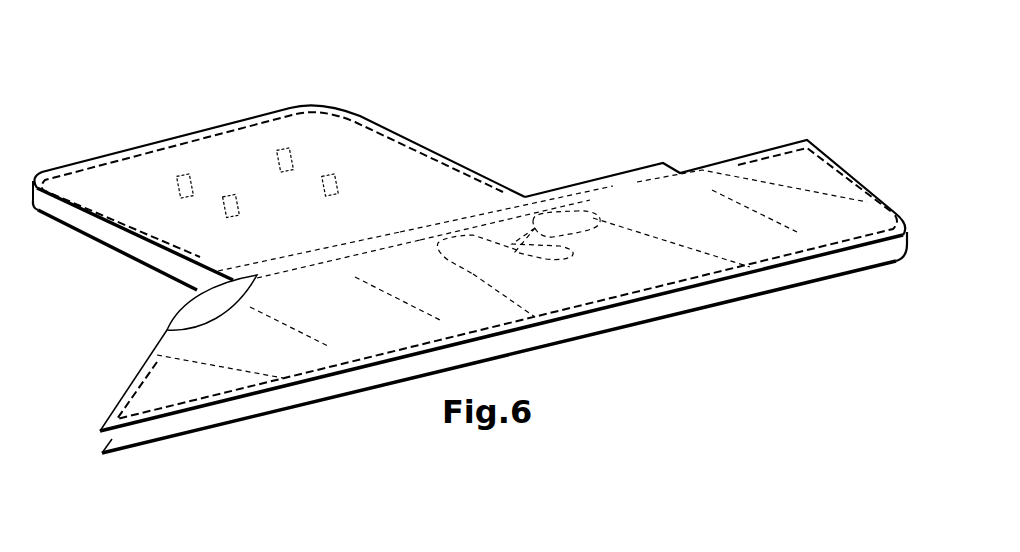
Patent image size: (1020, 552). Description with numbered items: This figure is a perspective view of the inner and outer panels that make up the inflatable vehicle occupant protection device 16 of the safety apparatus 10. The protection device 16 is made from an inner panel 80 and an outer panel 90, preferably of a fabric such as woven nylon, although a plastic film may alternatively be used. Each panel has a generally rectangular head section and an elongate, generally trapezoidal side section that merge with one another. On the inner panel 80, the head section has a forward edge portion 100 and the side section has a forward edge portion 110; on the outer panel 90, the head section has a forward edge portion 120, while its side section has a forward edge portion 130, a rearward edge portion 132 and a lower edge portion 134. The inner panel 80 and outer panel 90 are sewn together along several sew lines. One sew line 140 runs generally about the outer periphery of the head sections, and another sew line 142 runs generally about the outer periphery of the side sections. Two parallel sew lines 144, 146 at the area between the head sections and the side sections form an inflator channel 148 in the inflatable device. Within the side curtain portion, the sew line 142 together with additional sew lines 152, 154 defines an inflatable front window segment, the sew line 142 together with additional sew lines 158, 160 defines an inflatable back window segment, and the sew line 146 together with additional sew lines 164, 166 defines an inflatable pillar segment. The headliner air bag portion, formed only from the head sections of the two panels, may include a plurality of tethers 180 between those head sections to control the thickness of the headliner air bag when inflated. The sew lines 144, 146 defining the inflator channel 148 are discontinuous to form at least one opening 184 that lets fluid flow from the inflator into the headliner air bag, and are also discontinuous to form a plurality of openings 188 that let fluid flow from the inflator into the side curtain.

The safety apparatus 10 is at (832, 108).
The inflatable vehicle occupant protection device 16 is at (740, 127).
The inner panel 80 is at (33, 221).
The outer panel 90 is at (38, 163).
The forward edge portion 100 is at (117, 255).
The forward edge portion 110 is at (123, 395).
The forward edge portion 120 is at (73, 213).
The forward edge portion 130 is at (102, 453).
The rearward edge portion 132 is at (898, 262).
The lower edge portion 134 is at (260, 416).
The sew line 140 is at (375, 127).
The sew line 142 is at (680, 283).
The sew line 144 is at (263, 257).
The sew line 146 is at (165, 331).
The inflator channel 148 is at (437, 225).
The sew line 152 is at (213, 366).
The sew line 154 is at (497, 289).
The sew line 158 is at (655, 240).
The sew line 160 is at (823, 190).
The sew line 164 is at (507, 250).
The sew line 166 is at (555, 237).
The tethers 180 is at (330, 182).
The opening 184 is at (330, 240).
The openings 188 is at (490, 217).